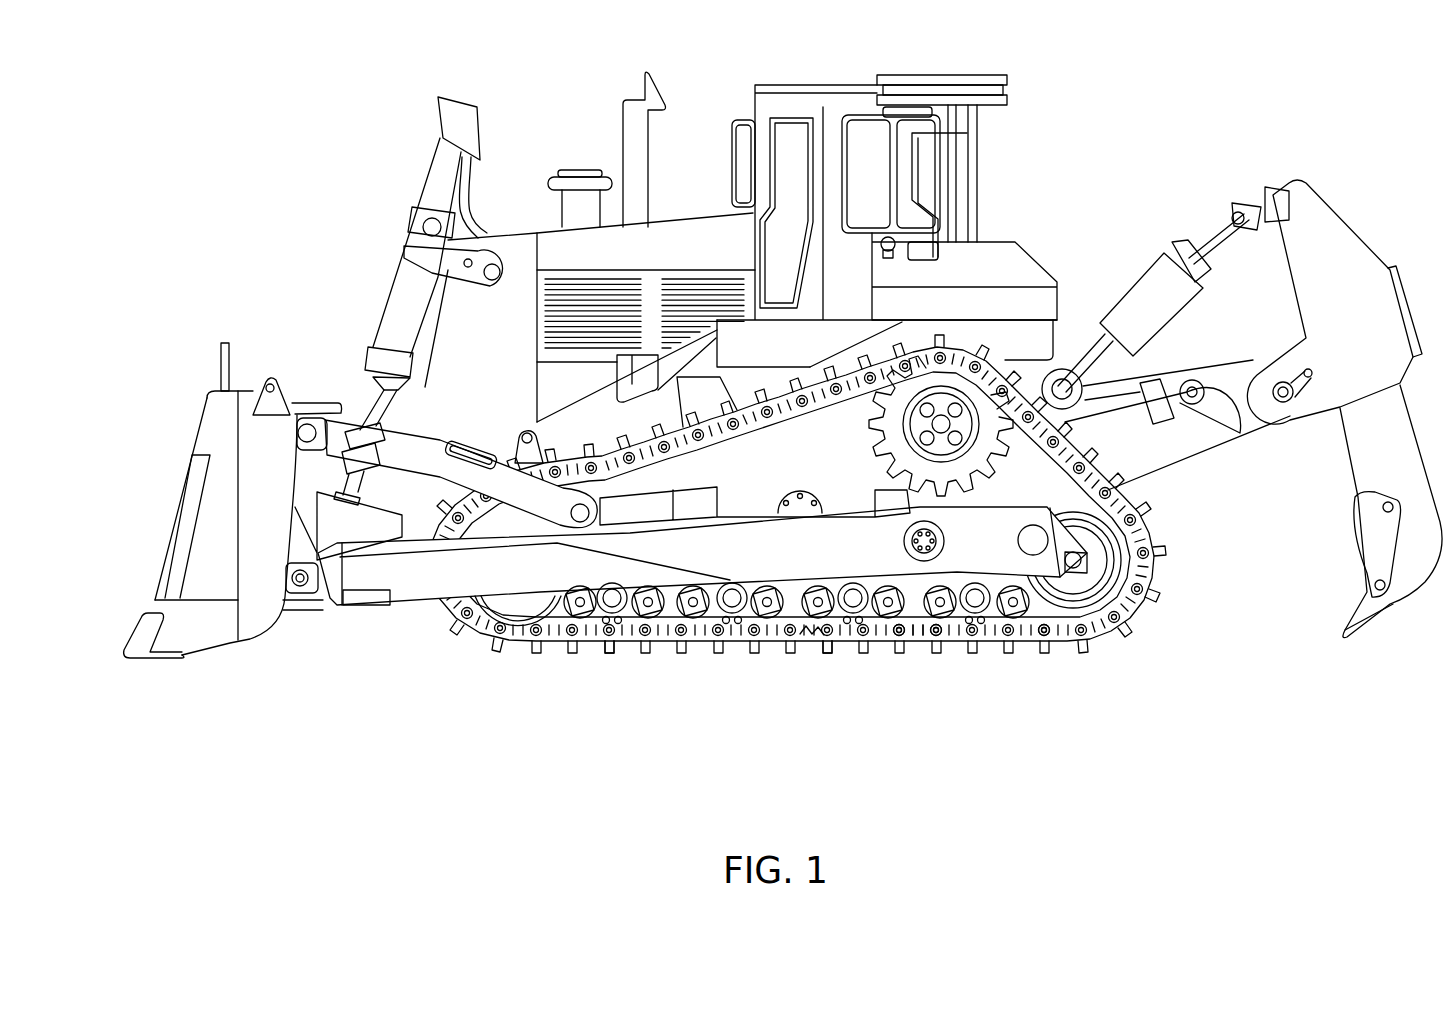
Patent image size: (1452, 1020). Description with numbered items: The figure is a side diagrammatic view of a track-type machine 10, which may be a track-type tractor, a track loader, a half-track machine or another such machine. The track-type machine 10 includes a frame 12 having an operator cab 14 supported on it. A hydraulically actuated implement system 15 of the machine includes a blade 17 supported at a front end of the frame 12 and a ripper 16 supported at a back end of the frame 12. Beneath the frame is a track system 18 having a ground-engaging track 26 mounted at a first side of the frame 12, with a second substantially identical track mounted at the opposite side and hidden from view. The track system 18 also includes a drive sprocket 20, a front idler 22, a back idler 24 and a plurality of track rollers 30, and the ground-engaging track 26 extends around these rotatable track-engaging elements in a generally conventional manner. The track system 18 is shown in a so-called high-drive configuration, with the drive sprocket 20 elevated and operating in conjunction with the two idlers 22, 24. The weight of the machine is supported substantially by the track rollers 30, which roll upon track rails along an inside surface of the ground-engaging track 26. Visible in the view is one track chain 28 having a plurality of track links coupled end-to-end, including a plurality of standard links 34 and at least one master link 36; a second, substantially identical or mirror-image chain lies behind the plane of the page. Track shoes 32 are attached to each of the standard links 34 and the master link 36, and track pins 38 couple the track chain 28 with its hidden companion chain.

The track-type machine 10 is at (1176, 121).
The frame 12 is at (1048, 333).
The operator cab 14 is at (979, 156).
The hydraulically actuated implement system 15 is at (236, 313).
The ripper 16 is at (1402, 297).
The blade 17 is at (186, 480).
The track system 18 is at (1177, 586).
The drive sprocket 20 is at (1003, 472).
The front idler 22 is at (527, 612).
The back idler 24 is at (1130, 612).
The ground-engaging track 26 is at (782, 657).
The track chain 28 is at (890, 655).
The track rollers 30 is at (944, 640).
The track shoes 32 is at (906, 652).
The standard links 34 is at (636, 656).
The master link 36 is at (828, 644).
The track pins 38 is at (1030, 645).